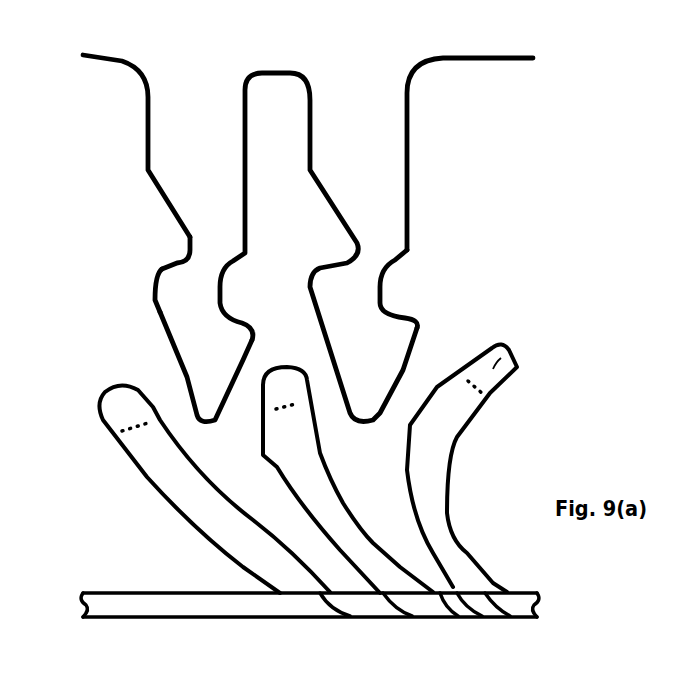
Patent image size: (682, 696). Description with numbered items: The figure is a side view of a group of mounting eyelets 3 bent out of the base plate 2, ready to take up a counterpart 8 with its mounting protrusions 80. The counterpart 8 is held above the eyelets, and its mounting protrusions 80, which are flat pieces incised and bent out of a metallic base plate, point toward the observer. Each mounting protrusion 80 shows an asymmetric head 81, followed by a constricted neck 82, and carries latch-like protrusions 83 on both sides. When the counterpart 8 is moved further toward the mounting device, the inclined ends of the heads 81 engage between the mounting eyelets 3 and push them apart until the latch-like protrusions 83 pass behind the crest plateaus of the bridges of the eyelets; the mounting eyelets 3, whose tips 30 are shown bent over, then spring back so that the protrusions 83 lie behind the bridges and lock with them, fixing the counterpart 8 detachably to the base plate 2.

The counterpart 8 is at (363, 85).
The mounting protrusion 80 is at (183, 146).
The asymmetric head 81 is at (210, 353).
The constricted neck 82 is at (183, 254).
The latch-like protrusion 83 is at (153, 277).
The mounting eyelet 3 is at (187, 492).
The finger tip 30 is at (508, 350).
The base plate 2 is at (230, 605).